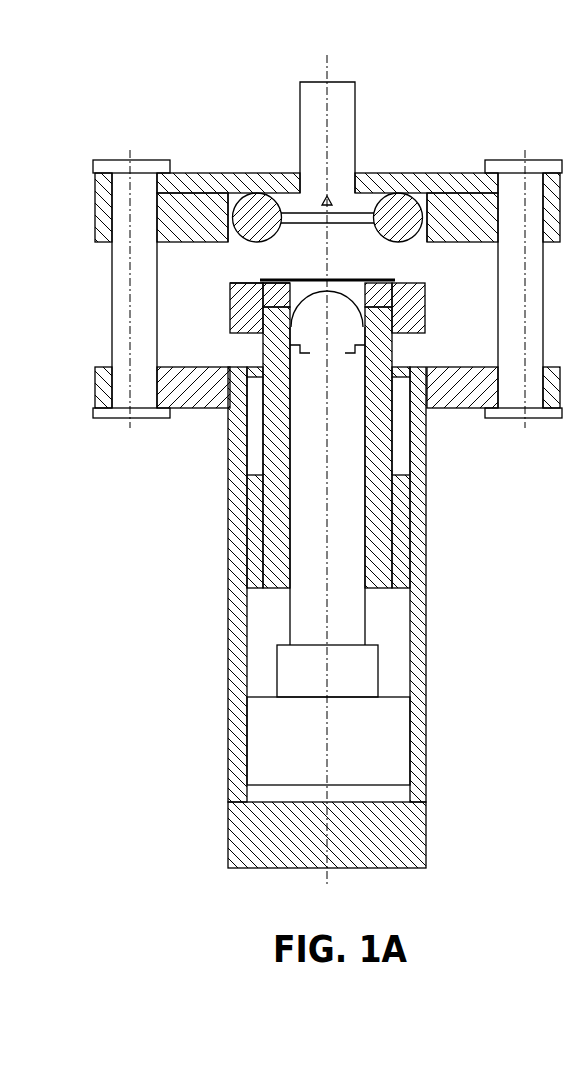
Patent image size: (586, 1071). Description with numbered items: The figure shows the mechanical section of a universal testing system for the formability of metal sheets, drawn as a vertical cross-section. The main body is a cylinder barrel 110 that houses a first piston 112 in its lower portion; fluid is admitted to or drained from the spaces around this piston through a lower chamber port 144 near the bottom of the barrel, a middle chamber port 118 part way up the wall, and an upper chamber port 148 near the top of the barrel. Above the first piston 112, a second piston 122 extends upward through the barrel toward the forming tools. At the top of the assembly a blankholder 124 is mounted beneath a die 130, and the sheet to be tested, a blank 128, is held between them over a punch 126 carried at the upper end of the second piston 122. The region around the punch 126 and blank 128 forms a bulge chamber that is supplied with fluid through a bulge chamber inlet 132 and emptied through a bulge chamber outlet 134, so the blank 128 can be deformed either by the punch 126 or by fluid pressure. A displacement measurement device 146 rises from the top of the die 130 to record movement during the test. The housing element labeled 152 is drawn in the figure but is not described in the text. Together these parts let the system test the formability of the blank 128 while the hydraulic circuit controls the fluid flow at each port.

The cylinder barrel 110 is at (417, 728).
The first piston 112 is at (300, 727).
The middle chamber port 118 is at (235, 598).
The second piston 122 is at (387, 510).
The blankholder 124 is at (400, 323).
The punch 126 is at (293, 327).
The blank 128 is at (285, 280).
The die 130 is at (400, 223).
The bulge chamber inlet 132 is at (427, 287).
The bulge chamber outlet 134 is at (232, 289).
The lower chamber port 144 is at (240, 795).
The displacement measurement device 146 is at (335, 103).
The upper chamber port 148 is at (230, 430).
The upper housing 152 is at (208, 192).